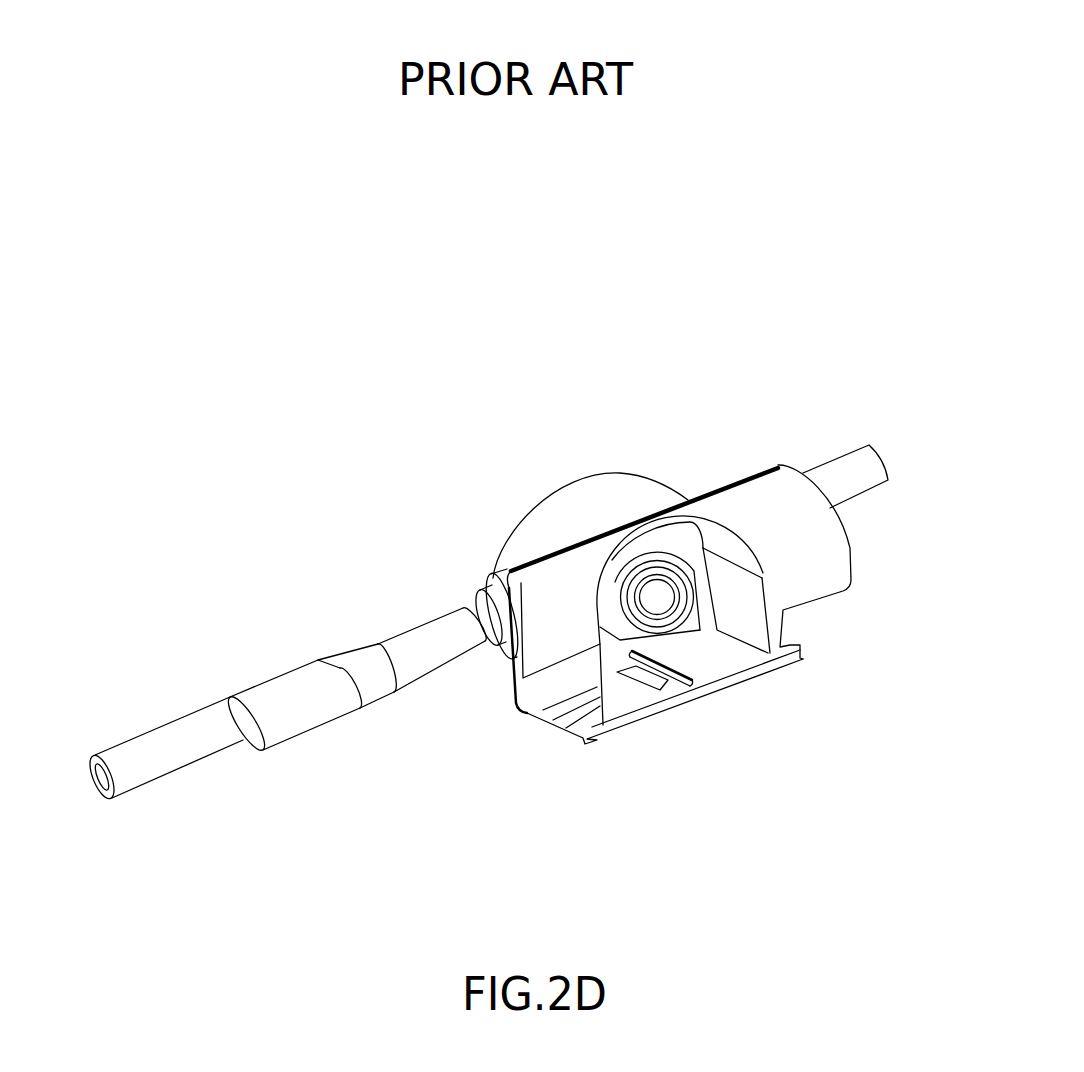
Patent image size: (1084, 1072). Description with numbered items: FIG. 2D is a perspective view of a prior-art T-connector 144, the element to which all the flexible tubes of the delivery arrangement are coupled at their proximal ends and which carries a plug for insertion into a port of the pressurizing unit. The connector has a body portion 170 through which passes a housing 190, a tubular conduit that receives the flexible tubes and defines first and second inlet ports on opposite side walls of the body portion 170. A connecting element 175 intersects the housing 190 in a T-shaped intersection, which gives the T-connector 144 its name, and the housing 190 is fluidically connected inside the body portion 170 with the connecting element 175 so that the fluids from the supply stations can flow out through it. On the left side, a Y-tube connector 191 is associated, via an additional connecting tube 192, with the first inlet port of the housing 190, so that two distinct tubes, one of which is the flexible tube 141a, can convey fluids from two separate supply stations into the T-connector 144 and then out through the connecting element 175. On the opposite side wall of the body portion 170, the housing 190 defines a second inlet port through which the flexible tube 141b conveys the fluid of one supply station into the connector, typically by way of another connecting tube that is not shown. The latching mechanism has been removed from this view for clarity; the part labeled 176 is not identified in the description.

The T-connector 144 is at (745, 276).
The housing 176 is at (736, 500).
The body portion 170 is at (587, 500).
The connecting element 175 is at (662, 603).
The housing 190 is at (497, 588).
The additional connecting tube 192 is at (488, 636).
The Y-tube connector 191 is at (297, 714).
The flexible tube 141a is at (147, 755).
The flexible tube 141b is at (829, 477).